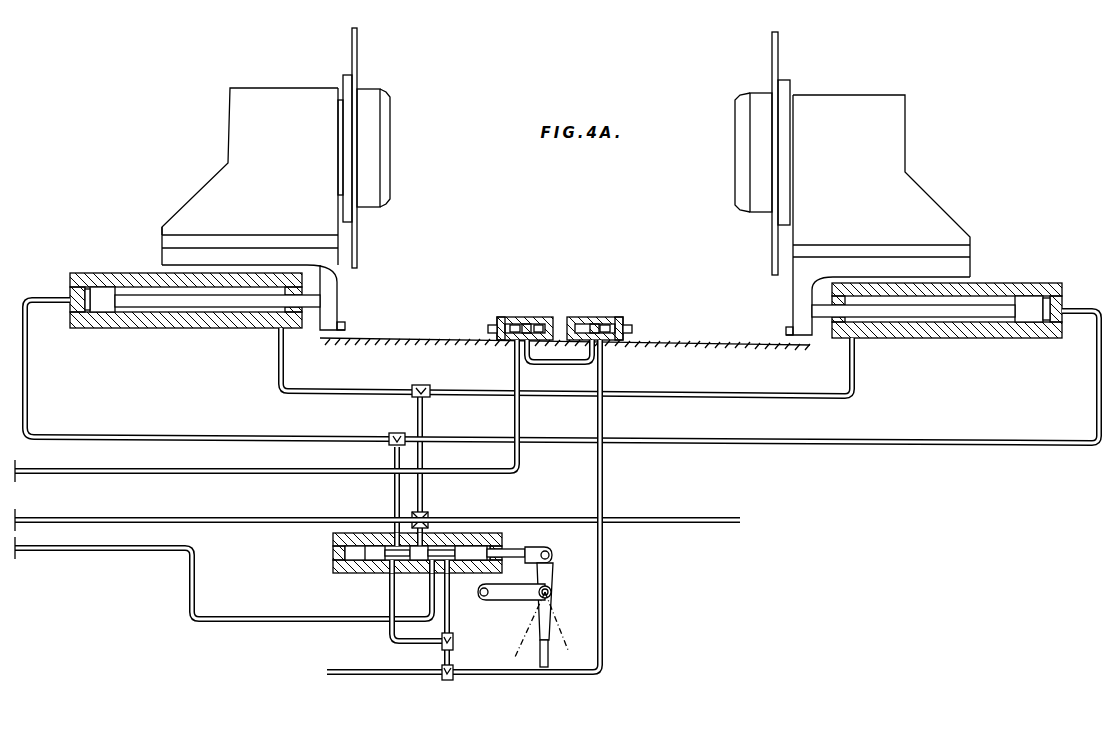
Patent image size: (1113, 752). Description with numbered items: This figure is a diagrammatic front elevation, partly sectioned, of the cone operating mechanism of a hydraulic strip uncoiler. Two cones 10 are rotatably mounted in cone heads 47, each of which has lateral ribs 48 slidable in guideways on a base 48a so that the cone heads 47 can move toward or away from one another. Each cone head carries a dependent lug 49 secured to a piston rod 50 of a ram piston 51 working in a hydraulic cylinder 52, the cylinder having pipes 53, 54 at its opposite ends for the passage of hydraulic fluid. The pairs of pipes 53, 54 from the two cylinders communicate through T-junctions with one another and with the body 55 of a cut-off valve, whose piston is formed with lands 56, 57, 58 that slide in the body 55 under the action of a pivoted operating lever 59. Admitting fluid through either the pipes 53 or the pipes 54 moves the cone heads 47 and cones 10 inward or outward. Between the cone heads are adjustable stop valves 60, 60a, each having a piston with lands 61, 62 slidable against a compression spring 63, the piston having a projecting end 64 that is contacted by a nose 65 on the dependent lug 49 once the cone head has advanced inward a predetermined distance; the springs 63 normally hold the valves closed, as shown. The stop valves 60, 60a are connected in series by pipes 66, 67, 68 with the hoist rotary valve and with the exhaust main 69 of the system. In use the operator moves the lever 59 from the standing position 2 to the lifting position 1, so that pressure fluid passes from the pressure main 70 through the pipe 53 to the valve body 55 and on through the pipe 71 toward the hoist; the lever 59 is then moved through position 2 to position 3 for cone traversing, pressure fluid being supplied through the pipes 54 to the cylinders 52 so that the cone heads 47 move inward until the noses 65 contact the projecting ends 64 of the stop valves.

The lifting position 1 is at (622, 627).
The standing position 2 is at (617, 647).
The cone traversing position 3 is at (520, 642).
The cone 10 is at (384, 133).
The cone head 47 is at (242, 147).
The lateral rib 48 is at (172, 243).
The base 48a is at (690, 337).
The dependent lug 49 is at (330, 298).
The piston rod 50 is at (200, 304).
The ram piston 51 is at (103, 304).
The hydraulic cylinder 52 is at (97, 283).
The pipe 53 is at (745, 395).
The pipe 54 is at (47, 297).
The body of cut-off valve 55 is at (350, 567).
The land 56 is at (373, 562).
The land 57 is at (417, 562).
The land 58 is at (463, 552).
The operating lever 59 is at (541, 619).
The adjustable stop valve 60 is at (503, 315).
The adjustable stop valve 60a is at (612, 315).
The land 61 is at (497, 318).
The land 62 is at (518, 325).
The compression spring 63 is at (540, 326).
The projecting end 64 is at (493, 330).
The nose 65 is at (343, 327).
The pipe 66 is at (180, 471).
The pipe 67 is at (605, 362).
The pipe 68 is at (607, 543).
The exhaust main 69 is at (358, 671).
The pressure main 70 is at (683, 520).
The pipe 71 is at (230, 617).